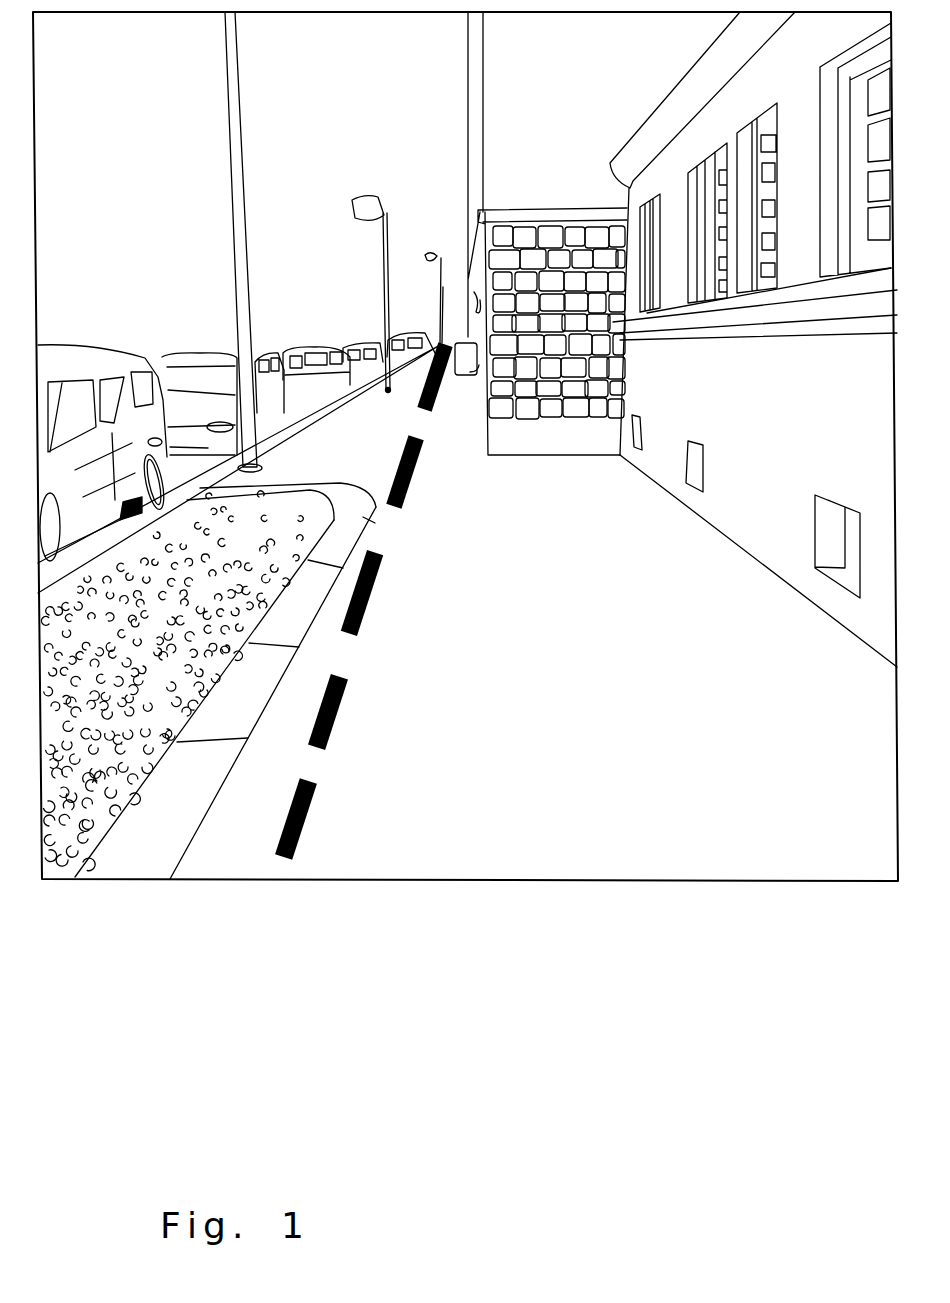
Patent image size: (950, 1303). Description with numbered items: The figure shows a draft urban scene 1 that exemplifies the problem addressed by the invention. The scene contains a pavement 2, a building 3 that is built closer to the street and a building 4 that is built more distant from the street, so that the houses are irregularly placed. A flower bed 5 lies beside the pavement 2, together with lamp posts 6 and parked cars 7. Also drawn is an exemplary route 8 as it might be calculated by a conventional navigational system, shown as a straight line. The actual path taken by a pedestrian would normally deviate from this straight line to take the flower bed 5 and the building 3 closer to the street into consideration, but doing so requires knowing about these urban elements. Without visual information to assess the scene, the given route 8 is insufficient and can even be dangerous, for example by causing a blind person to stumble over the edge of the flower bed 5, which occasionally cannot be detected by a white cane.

The urban scene 1 is at (722, 935).
The pavement 2 is at (573, 828).
The building 3 is at (568, 387).
The building 4 is at (768, 507).
The flower bed 5 is at (108, 690).
The lamp posts 6 is at (388, 390).
The parked cars 7 is at (194, 440).
The route 8 is at (413, 497).